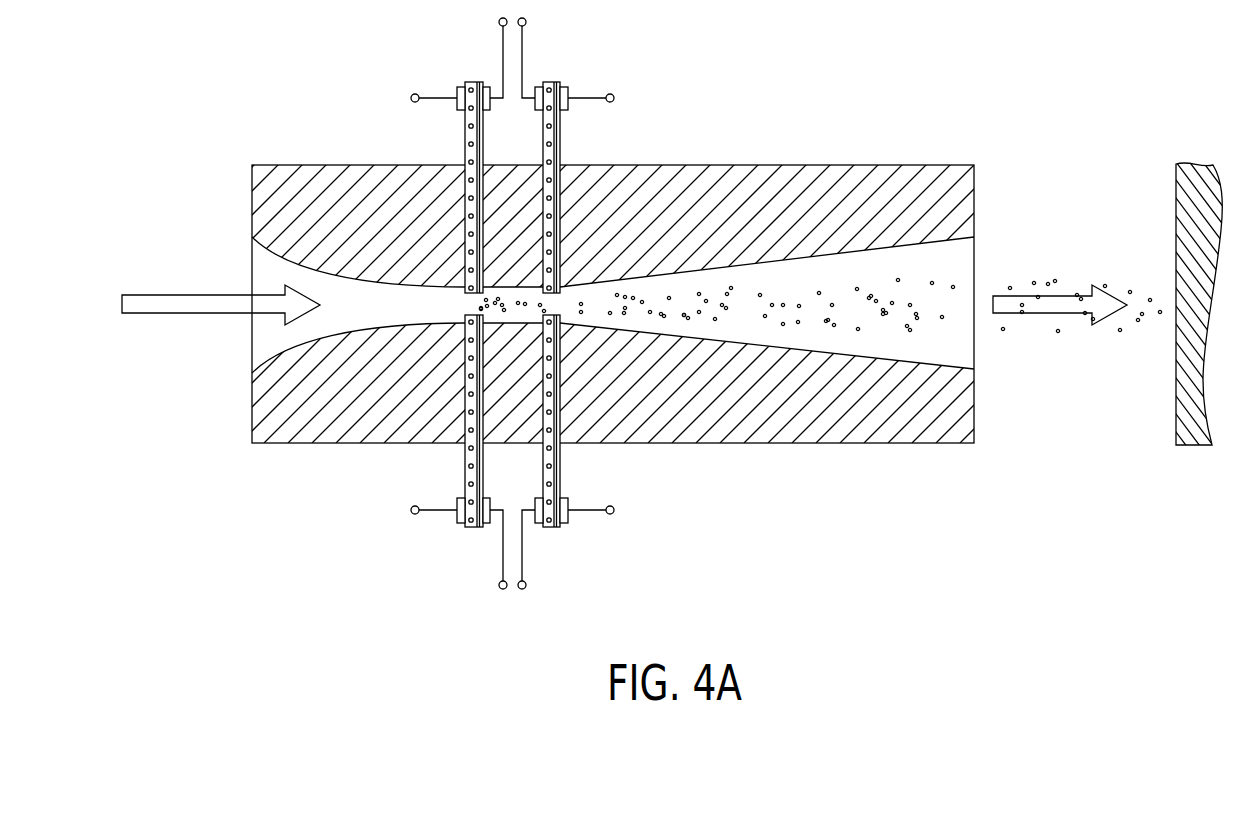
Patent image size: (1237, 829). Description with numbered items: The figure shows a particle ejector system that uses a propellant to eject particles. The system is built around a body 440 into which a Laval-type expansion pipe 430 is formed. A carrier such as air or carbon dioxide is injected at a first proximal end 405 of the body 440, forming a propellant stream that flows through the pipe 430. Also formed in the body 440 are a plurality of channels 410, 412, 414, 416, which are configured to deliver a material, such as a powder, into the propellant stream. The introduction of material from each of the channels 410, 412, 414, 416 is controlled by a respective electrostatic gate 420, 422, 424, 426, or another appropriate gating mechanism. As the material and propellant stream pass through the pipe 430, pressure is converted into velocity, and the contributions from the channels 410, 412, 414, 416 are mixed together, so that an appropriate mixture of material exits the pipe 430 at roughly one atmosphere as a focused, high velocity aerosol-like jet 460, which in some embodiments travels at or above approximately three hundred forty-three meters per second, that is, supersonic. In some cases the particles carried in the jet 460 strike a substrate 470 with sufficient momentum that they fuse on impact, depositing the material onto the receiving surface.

The first proximal end 405 is at (252, 352).
The channel 410 is at (465, 147).
The channel 412 is at (560, 147).
The channel 414 is at (465, 460).
The channel 416 is at (560, 460).
The electrostatic gate 420 is at (462, 85).
The electrostatic gate 422 is at (563, 85).
The electrostatic gate 424 is at (462, 524).
The electrostatic gate 426 is at (563, 524).
The Laval-type expansion pipe 430 is at (772, 345).
The body 440 is at (838, 443).
The aerosol-like jet 460 is at (1040, 290).
The substrate 470 is at (1176, 370).